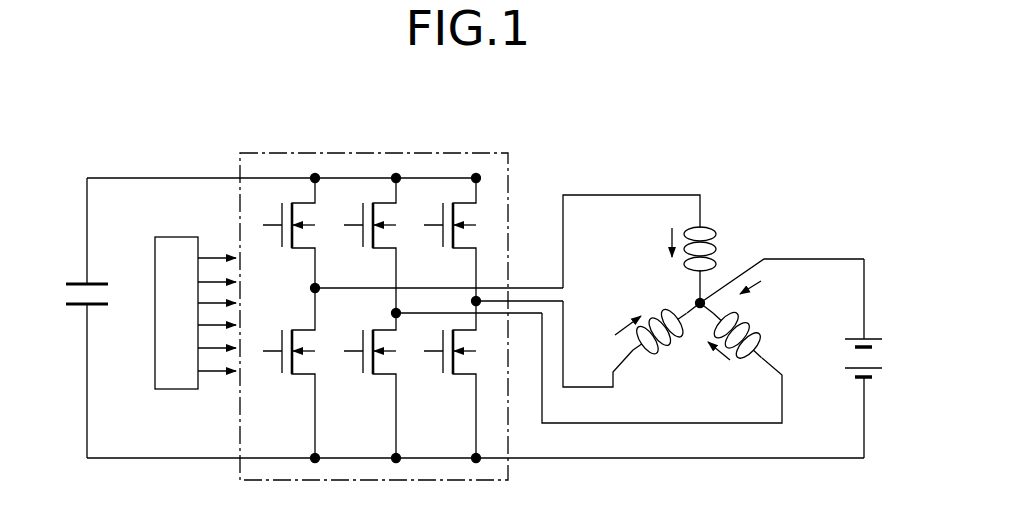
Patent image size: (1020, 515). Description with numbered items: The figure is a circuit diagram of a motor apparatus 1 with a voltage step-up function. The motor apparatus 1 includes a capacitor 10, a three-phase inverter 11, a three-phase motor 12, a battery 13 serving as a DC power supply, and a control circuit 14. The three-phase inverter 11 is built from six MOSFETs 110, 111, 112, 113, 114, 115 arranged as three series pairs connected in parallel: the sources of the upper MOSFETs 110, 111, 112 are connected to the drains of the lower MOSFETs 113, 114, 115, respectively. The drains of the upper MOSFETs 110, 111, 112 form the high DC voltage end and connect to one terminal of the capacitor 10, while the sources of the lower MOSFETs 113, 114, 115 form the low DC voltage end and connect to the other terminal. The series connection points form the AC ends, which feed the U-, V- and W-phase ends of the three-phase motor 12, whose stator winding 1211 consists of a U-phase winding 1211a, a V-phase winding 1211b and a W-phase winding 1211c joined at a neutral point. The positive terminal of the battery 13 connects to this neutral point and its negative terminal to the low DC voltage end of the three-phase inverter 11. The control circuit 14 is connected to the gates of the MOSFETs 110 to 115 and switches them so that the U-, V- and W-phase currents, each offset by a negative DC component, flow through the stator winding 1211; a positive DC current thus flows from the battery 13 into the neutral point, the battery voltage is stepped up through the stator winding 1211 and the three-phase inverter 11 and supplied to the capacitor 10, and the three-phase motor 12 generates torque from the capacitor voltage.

The motor apparatus 1 is at (571, 134).
The capacitor 10 is at (78, 283).
The three-phase inverter 11 is at (315, 153).
The MOSFET 110 is at (281, 247).
The MOSFET 111 is at (362, 247).
The MOSFET 112 is at (442, 247).
The MOSFET 113 is at (281, 373).
The MOSFET 114 is at (362, 373).
The MOSFET 115 is at (442, 373).
The three-phase motor 12 is at (663, 193).
The stator winding 1211 is at (739, 279).
The U-phase winding 1211a is at (718, 248).
The V-phase winding 1211b is at (752, 326).
The W-phase winding 1211c is at (674, 352).
The battery 13 is at (872, 337).
The control circuit 14 is at (178, 237).